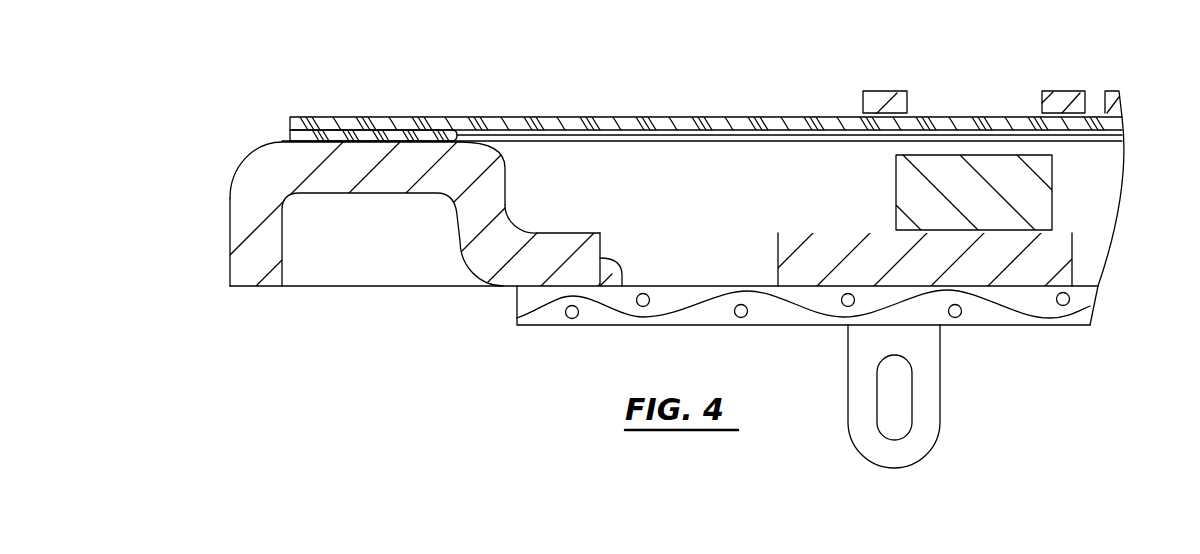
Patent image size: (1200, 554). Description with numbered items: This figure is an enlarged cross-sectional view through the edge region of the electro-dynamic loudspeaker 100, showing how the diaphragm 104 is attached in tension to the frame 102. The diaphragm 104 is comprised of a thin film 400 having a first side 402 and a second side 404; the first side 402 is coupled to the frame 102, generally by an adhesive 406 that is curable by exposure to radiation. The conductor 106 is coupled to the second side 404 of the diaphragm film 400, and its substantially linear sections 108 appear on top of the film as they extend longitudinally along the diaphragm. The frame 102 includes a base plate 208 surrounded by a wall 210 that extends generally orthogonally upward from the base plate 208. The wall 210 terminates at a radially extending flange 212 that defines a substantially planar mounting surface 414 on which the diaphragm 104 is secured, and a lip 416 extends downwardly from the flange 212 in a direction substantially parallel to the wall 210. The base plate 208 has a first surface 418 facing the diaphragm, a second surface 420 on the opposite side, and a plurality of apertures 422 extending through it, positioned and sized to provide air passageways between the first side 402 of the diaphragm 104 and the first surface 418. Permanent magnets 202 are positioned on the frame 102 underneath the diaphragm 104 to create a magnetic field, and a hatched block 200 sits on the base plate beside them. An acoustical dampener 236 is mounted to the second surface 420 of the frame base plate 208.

The electro-dynamic loudspeaker 100 is at (488, 66).
The frame 102 is at (236, 128).
The diaphragm 104 is at (618, 113).
The conductor 106 is at (1097, 62).
The substantially linear sections 108 is at (890, 91).
The hatched block 200 is at (798, 228).
The permanent magnets 202 is at (896, 197).
The base plate 208 is at (585, 228).
The wall 210 is at (505, 163).
The radially extending flange 212 is at (330, 196).
The acoustical dampener 236 is at (1020, 330).
The thin film 400 is at (737, 124).
The first side 402 is at (663, 131).
The second side 404 is at (793, 116).
The adhesive 406 is at (290, 133).
The mounting surface 414 is at (360, 140).
The lip 416 is at (230, 220).
The first surface 418 is at (522, 219).
The second surface 420 is at (570, 288).
The apertures 422 is at (622, 286).